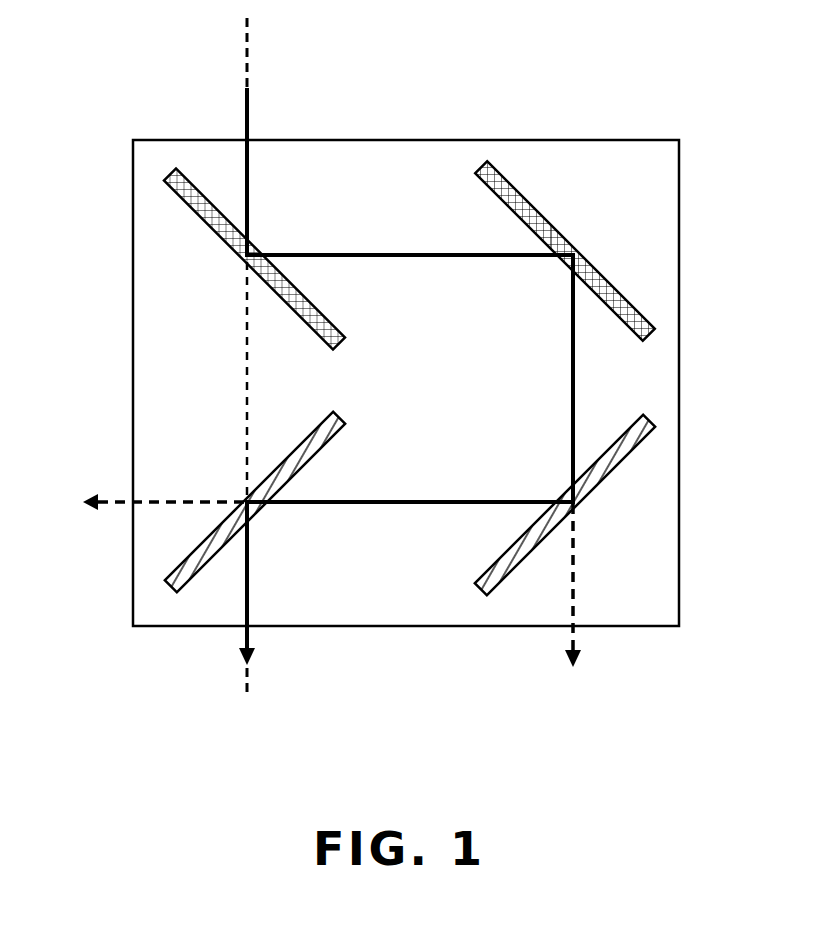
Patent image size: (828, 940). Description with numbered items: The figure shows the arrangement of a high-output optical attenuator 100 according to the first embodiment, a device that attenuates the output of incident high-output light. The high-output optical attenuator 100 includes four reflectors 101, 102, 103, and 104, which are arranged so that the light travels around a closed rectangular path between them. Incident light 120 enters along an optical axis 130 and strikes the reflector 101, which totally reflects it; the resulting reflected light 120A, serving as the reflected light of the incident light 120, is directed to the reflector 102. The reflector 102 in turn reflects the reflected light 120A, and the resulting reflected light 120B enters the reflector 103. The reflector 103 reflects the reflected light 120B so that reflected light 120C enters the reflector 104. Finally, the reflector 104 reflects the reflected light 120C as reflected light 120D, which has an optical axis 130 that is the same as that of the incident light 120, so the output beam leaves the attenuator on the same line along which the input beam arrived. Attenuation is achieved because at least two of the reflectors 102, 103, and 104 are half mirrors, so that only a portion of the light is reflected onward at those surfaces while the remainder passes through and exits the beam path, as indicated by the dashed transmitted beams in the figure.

The high-output optical attenuator 100 is at (150, 86).
The optical axis 130 is at (250, 40).
The incident light 120 is at (250, 182).
The reflected light 120A is at (410, 258).
The reflected light 120B is at (569, 384).
The reflected light 120C is at (420, 498).
The reflected light 120D is at (252, 575).
The reflector 101 is at (238, 243).
The reflector 102 is at (590, 266).
The reflector 103 is at (628, 452).
The reflector 104 is at (180, 553).